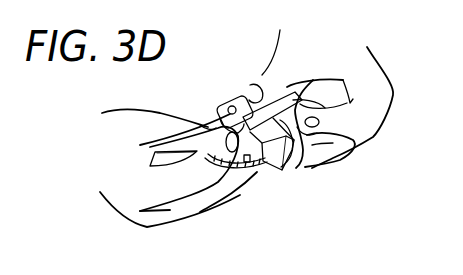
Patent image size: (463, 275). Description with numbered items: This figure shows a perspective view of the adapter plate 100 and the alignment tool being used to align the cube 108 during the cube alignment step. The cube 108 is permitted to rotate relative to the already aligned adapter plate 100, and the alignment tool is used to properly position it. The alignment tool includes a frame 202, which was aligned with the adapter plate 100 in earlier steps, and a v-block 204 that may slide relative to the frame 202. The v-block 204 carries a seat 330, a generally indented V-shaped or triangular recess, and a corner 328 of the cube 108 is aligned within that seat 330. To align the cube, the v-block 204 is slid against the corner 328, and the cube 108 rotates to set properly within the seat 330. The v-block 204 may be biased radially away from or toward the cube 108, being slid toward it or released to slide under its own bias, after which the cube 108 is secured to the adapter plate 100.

The adapter plate 100 is at (238, 172).
The cube 108 is at (222, 110).
The frame 202 is at (297, 168).
The v-block 204 is at (298, 98).
The corner 328 is at (152, 143).
The seat 330 is at (262, 110).